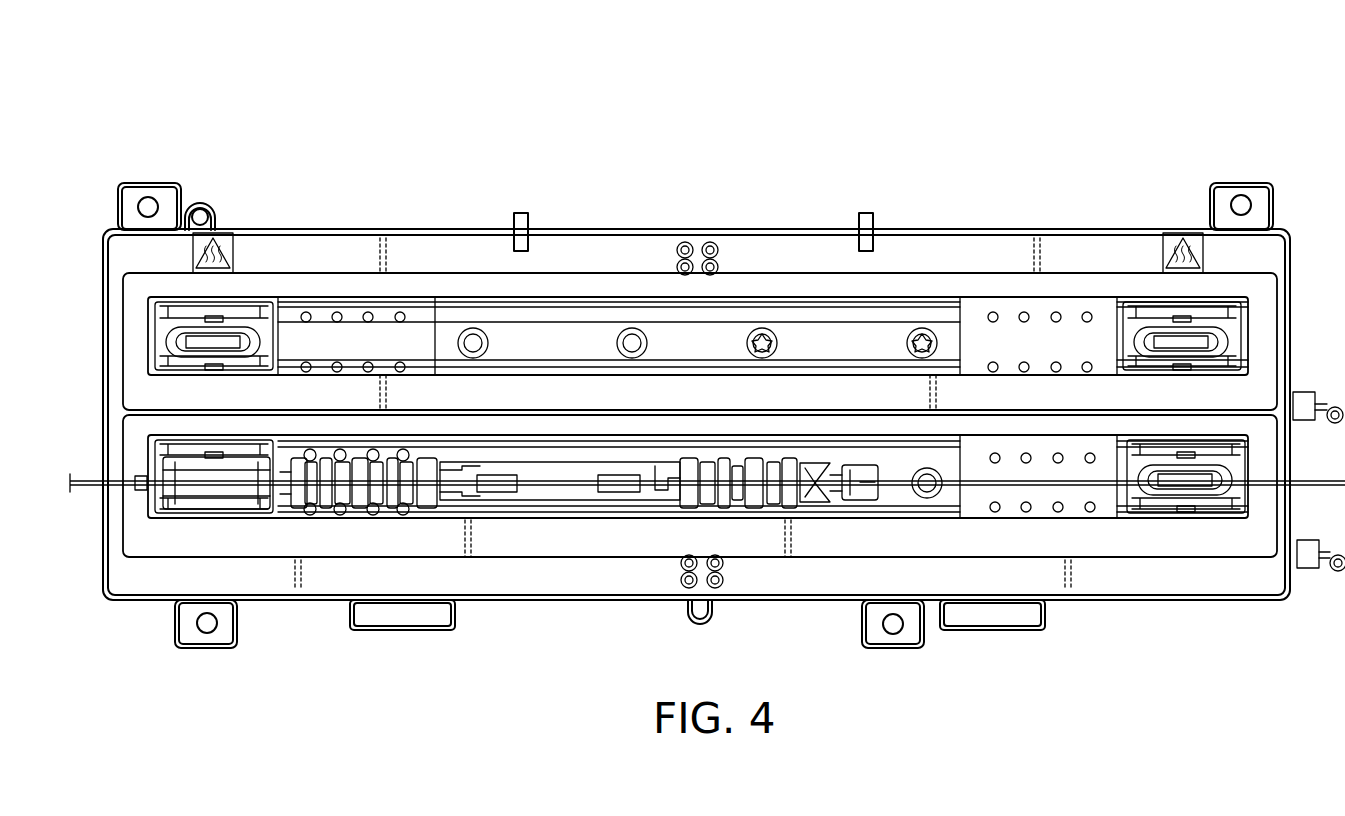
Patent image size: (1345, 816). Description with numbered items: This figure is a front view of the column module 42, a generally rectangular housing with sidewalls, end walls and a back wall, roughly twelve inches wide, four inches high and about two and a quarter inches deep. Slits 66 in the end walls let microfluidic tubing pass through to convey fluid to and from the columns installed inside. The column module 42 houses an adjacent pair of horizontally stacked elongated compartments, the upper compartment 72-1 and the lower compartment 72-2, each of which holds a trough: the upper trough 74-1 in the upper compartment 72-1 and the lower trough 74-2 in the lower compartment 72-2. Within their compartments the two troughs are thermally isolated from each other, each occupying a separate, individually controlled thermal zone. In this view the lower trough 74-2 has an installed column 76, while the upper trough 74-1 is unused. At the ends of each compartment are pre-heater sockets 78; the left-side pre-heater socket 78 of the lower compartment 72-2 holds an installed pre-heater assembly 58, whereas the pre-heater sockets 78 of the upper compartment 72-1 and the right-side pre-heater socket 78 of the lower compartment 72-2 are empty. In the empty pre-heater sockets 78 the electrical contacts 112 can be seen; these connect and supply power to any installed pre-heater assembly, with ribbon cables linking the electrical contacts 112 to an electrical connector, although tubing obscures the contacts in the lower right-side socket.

The column module 42 is at (606, 134).
The pre-heater assembly 58 is at (236, 486).
The slits 66 is at (1082, 484).
The upper compartment 72-1 is at (132, 306).
The lower compartment 72-2 is at (152, 540).
The upper trough 74-1 is at (690, 332).
The lower trough 74-2 is at (894, 506).
The column 76 is at (556, 487).
The pre-heater socket 78 is at (178, 303).
The electrical contacts 112 is at (232, 344).